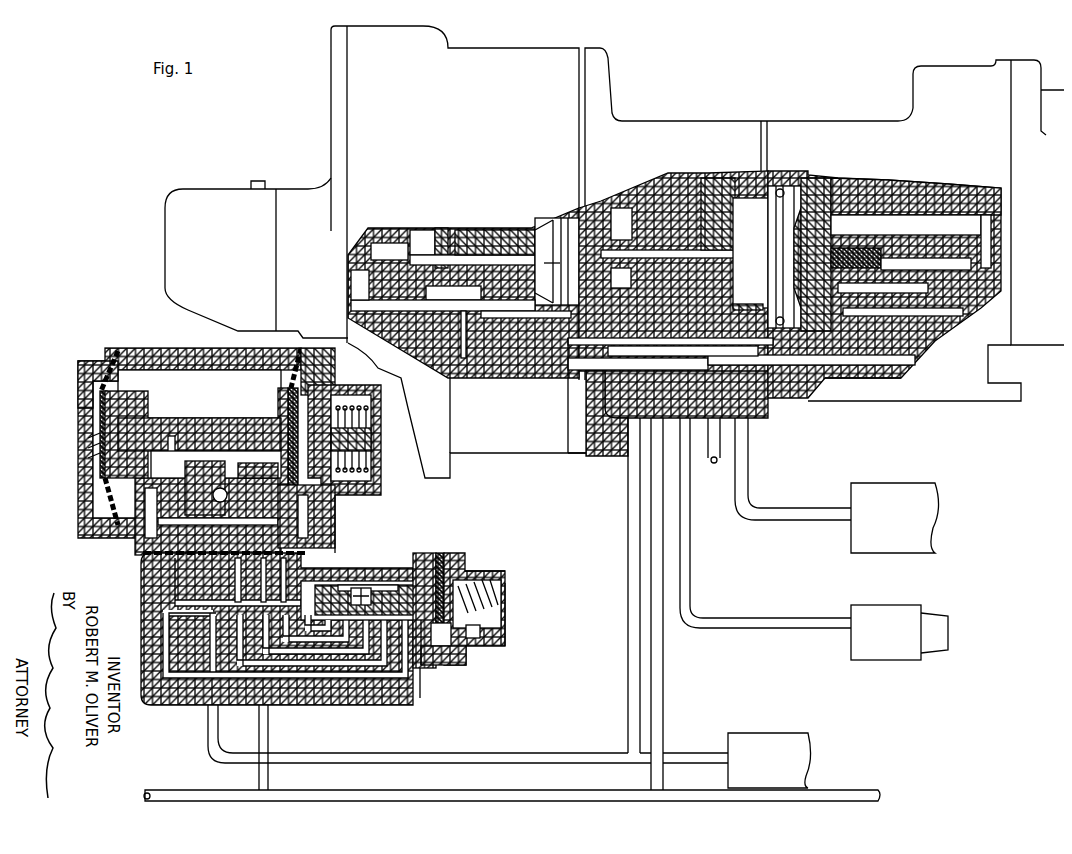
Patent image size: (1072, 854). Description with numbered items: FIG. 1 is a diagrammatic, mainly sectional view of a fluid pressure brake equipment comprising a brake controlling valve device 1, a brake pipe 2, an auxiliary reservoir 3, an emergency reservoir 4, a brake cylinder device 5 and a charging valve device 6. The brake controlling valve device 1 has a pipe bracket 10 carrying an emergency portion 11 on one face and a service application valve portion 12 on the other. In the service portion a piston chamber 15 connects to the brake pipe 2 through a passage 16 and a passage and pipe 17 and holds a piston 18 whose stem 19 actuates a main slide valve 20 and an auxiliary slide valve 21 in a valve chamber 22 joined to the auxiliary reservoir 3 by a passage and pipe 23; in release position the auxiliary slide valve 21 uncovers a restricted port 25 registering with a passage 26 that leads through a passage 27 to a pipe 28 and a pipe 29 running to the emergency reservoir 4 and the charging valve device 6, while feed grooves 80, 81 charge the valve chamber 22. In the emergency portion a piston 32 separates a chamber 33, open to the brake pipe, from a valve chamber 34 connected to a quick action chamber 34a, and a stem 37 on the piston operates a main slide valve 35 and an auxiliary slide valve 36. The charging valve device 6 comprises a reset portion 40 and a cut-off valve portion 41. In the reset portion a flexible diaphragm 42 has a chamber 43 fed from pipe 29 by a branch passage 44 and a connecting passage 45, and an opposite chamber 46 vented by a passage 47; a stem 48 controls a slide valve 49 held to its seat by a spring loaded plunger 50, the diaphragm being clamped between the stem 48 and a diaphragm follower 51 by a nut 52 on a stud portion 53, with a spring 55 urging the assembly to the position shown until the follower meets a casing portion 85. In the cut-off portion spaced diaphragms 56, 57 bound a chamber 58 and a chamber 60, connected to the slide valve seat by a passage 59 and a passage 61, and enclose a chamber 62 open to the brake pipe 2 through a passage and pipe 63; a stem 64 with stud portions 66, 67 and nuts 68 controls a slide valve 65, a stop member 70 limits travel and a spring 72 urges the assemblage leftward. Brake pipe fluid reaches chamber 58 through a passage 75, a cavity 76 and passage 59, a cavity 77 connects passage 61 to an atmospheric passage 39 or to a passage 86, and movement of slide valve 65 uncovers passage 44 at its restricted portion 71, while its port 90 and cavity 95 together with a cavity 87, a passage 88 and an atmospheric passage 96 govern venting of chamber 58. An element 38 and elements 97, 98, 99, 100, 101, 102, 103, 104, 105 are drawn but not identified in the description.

The brake controlling valve device 1 is at (316, 137).
The brake pipe 2 is at (829, 778).
The auxiliary reservoir 3 is at (875, 475).
The emergency reservoir 4 is at (759, 722).
The brake cylinder device 5 is at (886, 594).
The charging valve device 6 is at (86, 341).
The pipe bracket 10 is at (565, 440).
The emergency portion 11 is at (505, 445).
The service application valve portion 12 is at (792, 396).
The piston chamber 15 is at (773, 178).
The passage 16 is at (660, 190).
The passage and pipe 17 is at (650, 410).
The piston 18 is at (808, 178).
The stem 19 is at (823, 222).
The main slide valve 20 is at (920, 262).
The auxiliary slide valve 21 is at (852, 228).
The valve chamber 22 is at (905, 178).
The passage and pipe 23 is at (738, 398).
The restricted port 25 is at (883, 278).
The passage 26 is at (903, 319).
The passage 27 is at (590, 447).
The pipe 28 is at (618, 503).
The pipe 29 is at (505, 745).
The piston 32 is at (540, 212).
The chamber 33 is at (557, 212).
The valve chamber 34 is at (470, 221).
The quick action chamber 34a is at (612, 199).
The main slide valve 35 is at (559, 253).
The auxiliary slide valve 36 is at (368, 233).
The stem 37 is at (434, 219).
The valve body 38 is at (277, 629).
The passage 39 is at (305, 573).
The reset portion 40 is at (455, 657).
The cut-off valve portion 41 is at (152, 360).
The flexible diaphragm 42 is at (337, 631).
The chamber 43 is at (455, 552).
The branch passage 44 is at (167, 590).
The connecting passage 45 is at (203, 617).
The chamber 46 is at (455, 562).
The passage 47 is at (472, 620).
The stem 48 is at (330, 540).
The slide valve 49 is at (325, 577).
The spring loaded plunger 50 is at (355, 577).
The diaphragm follower 51 is at (425, 650).
The nut 52 is at (485, 565).
The stud portion 53 is at (498, 566).
The spring 55 is at (498, 583).
The flexible diaphragm 56 is at (75, 370).
The flexible diaphragm 57 is at (322, 360).
The chamber 58 is at (85, 385).
The passage 59 is at (130, 538).
The chamber 60 is at (330, 386).
The passage 61 is at (325, 512).
The chamber 62 is at (128, 345).
The passage and pipe 63 is at (245, 720).
The stem 64 is at (205, 425).
The slide valve 65 is at (258, 455).
The stud portion 66 is at (78, 428).
The stud portion 67 is at (363, 410).
The nut 68 is at (80, 405).
The stop member 70 is at (363, 393).
The restricted portion 71 is at (137, 483).
The spring 72 is at (363, 432).
The passage 75 is at (395, 660).
The cavity 76 is at (432, 556).
The cavity 77 is at (380, 577).
The feed groove 80 is at (750, 254).
The feed groove 81 is at (800, 180).
The portion of casing 85 is at (460, 642).
The passage 86 is at (303, 690).
The cavity 87 is at (413, 545).
The passage 88 is at (352, 650).
The port 90 is at (163, 428).
The cavity 95 is at (200, 455).
The atmospheric passage 96 is at (232, 492).
The passage 97 is at (880, 262).
The passage 98 is at (925, 342).
The passage 99 is at (575, 370).
The passage 100 is at (578, 400).
The conduit 101 is at (676, 482).
The chamber 102 is at (467, 285).
The passage 103 is at (461, 329).
The passage 104 is at (342, 305).
The bearing 105 is at (700, 180).